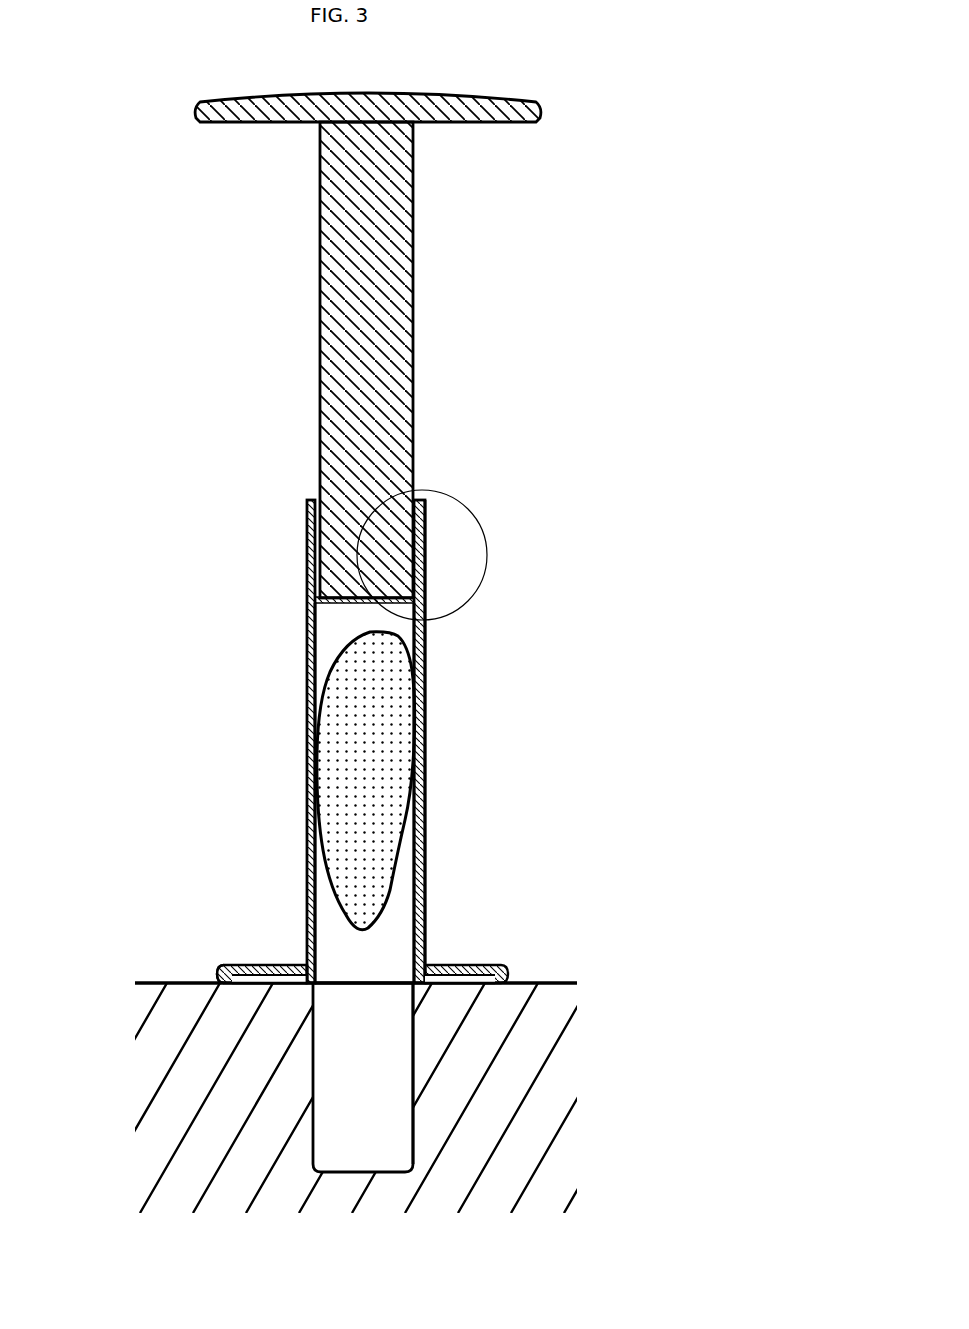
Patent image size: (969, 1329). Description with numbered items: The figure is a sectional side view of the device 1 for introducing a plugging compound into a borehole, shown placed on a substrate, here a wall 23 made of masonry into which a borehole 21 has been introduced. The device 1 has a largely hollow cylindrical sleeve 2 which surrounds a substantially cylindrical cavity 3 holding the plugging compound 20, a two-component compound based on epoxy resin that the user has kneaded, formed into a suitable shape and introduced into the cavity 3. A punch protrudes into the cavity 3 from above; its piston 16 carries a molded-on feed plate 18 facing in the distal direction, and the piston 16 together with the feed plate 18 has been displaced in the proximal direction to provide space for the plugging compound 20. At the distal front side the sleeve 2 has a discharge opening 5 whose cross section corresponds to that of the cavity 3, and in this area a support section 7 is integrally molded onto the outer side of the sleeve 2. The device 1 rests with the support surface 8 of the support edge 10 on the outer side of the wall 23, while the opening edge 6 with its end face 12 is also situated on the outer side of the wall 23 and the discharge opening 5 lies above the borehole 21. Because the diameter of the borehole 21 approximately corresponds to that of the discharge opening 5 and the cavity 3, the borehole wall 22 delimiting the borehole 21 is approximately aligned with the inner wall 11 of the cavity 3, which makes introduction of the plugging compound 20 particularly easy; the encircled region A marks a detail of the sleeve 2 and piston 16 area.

The device 1 is at (593, 198).
The sleeve 2 is at (420, 770).
The cavity 3 is at (333, 637).
The discharge opening 5 is at (370, 978).
The opening edge 6 is at (308, 982).
The support section 7 is at (267, 963).
The support surface 8 is at (217, 982).
The support edge 10 is at (223, 963).
The inner wall 11 is at (423, 858).
The end face 12 is at (418, 980).
The piston 16 is at (350, 435).
The feed plate 18 is at (352, 593).
The plugging compound 20 is at (385, 718).
The borehole 21 is at (380, 1052).
The borehole wall 22 is at (413, 1105).
The wall 23 is at (525, 1037).
The detail region A is at (473, 507).